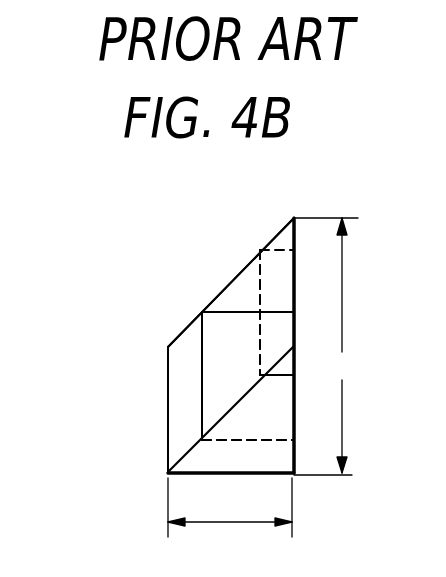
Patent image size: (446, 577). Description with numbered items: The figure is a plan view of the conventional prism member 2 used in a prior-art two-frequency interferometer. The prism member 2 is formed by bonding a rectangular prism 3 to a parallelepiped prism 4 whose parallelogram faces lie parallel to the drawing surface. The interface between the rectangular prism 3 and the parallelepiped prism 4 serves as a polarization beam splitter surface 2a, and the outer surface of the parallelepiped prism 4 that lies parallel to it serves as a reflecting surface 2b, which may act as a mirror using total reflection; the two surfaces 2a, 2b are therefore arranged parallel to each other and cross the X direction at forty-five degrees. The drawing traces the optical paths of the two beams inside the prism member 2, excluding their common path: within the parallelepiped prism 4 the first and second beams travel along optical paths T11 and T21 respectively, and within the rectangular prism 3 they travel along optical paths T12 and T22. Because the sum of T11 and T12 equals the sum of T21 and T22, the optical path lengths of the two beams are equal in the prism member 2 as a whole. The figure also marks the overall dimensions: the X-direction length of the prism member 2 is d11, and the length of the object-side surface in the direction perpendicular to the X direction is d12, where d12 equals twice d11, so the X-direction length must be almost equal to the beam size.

The prism member 2 is at (191, 273).
The polarization beam splitter surface 2a is at (190, 452).
The reflecting surface 2b is at (276, 236).
The rectangular prism 3 is at (294, 452).
The parallelepiped prism 4 is at (178, 363).
The optical path of the first beam in the parallelepiped prism T11 is at (200, 392).
The optical path of the first beam in the rectangular prism T12 is at (267, 380).
The optical path of the second beam in the parallelepiped prism T21 is at (260, 280).
The optical path of the second beam in the rectangular prism T22 is at (228, 443).
The X-direction length of the prism member d11 is at (230, 507).
The length perpendicular to the X direction d12 is at (326, 346).